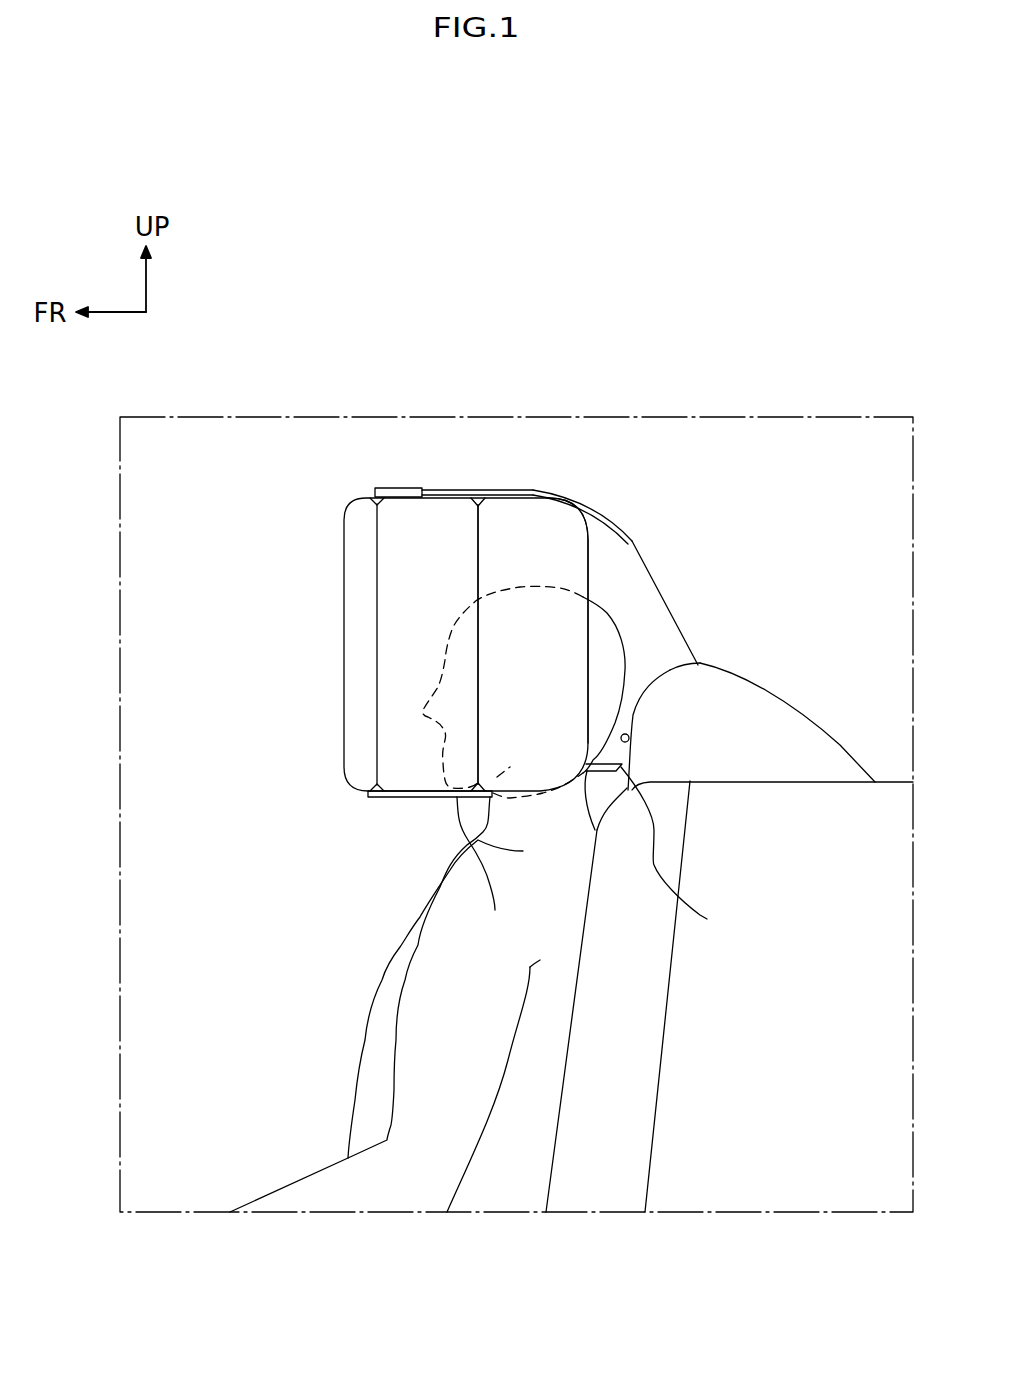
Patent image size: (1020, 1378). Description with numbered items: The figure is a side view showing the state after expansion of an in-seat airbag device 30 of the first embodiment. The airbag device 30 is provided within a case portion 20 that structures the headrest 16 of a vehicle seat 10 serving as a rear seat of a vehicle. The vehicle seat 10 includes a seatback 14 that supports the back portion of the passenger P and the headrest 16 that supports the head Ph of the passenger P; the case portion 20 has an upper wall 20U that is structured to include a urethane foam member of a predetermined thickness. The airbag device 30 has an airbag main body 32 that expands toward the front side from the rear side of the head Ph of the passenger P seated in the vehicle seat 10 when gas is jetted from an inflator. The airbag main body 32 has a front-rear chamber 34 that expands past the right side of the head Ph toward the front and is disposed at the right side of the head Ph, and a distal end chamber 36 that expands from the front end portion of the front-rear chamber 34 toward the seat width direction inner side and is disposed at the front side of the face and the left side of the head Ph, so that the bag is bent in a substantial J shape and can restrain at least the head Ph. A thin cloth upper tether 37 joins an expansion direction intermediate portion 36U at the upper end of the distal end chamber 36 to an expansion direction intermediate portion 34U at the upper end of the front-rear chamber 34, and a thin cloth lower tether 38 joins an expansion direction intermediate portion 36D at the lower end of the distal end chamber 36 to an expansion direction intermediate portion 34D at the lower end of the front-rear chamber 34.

The vehicle seat 10 is at (853, 716).
The seatback 14 is at (560, 997).
The headrest 16 is at (630, 743).
The case portion 20 is at (785, 691).
The upper wall 20U is at (705, 667).
The in-seat airbag device 30 is at (316, 623).
The airbag main body 32 is at (346, 508).
The front-rear chamber 34 is at (645, 567).
The expansion direction intermediate portion 34U is at (637, 540).
The expansion direction intermediate portion 34D is at (676, 849).
The distal end chamber 36 is at (546, 537).
The expansion direction intermediate portion 36U is at (422, 493).
The expansion direction intermediate portion 36D is at (413, 800).
The upper tether 37 is at (463, 487).
The lower tether 38 is at (484, 868).
The passenger P is at (375, 986).
The head Ph is at (613, 627).